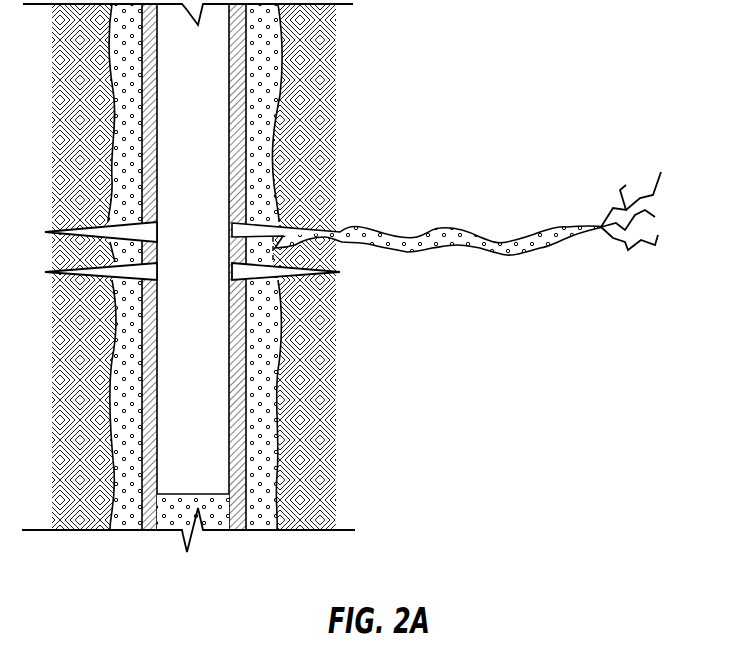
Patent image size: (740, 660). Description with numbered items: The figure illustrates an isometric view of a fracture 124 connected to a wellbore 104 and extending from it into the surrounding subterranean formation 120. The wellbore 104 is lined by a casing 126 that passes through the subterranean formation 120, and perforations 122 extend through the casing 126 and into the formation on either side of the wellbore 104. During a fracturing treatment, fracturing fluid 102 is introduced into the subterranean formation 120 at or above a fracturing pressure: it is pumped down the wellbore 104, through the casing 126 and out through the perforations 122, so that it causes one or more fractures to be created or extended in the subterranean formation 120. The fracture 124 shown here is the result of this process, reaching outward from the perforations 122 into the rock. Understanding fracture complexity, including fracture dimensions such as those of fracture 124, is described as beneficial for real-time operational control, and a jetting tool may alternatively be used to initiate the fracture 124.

The wellbore 104 is at (282, 65).
The casing 126 is at (247, 128).
The perforations 122 is at (248, 220).
The subterranean formation 120 is at (530, 113).
The fracturing fluid 102 is at (437, 228).
The fracture 124 is at (512, 242).